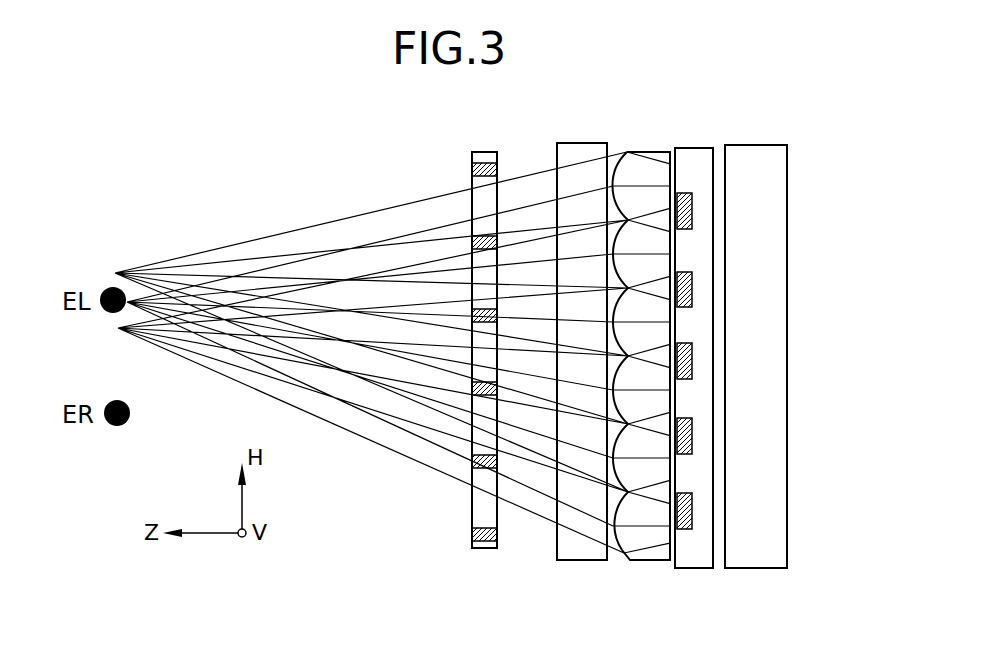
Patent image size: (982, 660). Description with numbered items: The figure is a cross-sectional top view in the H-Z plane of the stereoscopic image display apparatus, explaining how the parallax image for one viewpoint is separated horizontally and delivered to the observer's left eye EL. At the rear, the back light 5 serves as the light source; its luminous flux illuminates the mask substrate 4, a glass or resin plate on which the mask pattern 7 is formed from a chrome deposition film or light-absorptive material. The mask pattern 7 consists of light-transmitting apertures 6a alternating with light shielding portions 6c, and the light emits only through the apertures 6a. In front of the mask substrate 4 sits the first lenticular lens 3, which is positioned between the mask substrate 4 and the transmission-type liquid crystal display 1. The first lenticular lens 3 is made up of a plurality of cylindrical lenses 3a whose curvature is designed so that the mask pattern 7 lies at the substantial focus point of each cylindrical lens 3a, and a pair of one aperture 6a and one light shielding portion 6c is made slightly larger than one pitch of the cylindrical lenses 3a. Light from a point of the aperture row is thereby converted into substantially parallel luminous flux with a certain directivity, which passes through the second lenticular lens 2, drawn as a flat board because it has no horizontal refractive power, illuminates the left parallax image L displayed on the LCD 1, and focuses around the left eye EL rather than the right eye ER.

The transmission-type liquid crystal display 1 is at (485, 158).
The second lenticular lens 2 is at (577, 150).
The first lenticular lens 3 is at (614, 352).
The cylindrical lens 3a is at (606, 540).
The mask substrate 4 is at (753, 355).
The back light 5 is at (761, 150).
The aperture 6a is at (690, 247).
The light shielding portion 6c is at (690, 290).
The mask pattern 7 is at (670, 540).